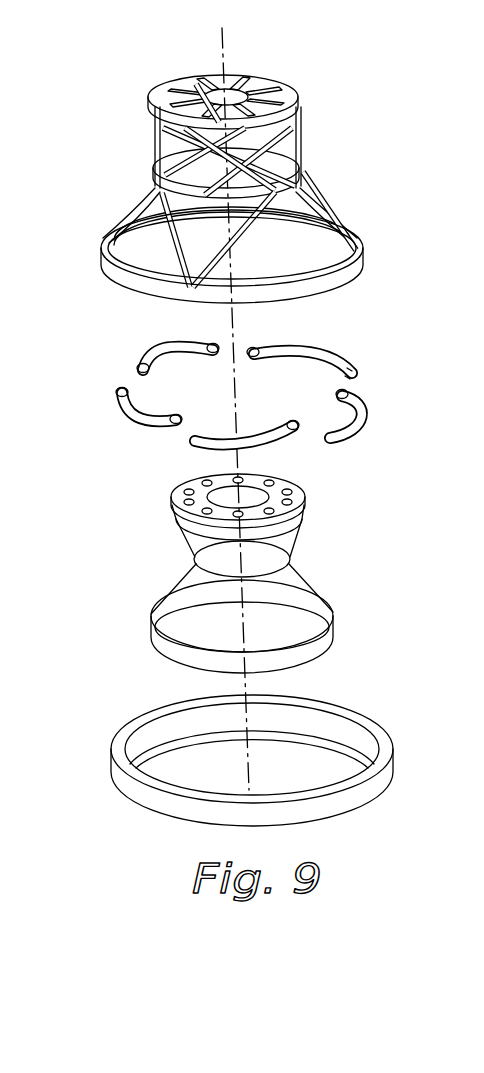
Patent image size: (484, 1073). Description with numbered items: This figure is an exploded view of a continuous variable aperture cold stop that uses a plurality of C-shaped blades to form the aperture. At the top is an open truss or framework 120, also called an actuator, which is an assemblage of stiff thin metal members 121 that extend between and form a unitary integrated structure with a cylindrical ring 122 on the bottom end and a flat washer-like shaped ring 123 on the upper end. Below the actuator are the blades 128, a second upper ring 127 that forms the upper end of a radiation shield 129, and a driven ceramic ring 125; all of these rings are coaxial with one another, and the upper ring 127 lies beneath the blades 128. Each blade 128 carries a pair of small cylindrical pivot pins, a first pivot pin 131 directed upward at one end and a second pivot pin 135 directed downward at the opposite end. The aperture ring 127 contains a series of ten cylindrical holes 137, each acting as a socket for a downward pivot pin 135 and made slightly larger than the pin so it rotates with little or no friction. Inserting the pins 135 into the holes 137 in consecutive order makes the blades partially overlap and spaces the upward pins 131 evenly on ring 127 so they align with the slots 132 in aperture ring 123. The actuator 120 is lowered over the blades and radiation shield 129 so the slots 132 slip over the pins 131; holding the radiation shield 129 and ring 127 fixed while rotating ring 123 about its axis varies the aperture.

The open truss or framework 120 is at (148, 149).
The stiff thin metal members 121 is at (310, 186).
The cylindrical ring 122 is at (100, 260).
The flat washer-like shaped ring 123 is at (168, 78).
The driven ceramic ring 125 is at (166, 716).
The second upper ring 127 is at (285, 481).
The blades 128 is at (331, 350).
The radiation shield 129 is at (184, 579).
The first pivot pin 131 is at (258, 348).
The slots 132 is at (233, 72).
The second pivot pin 135 is at (345, 379).
The cylindrical holes 137 is at (188, 484).